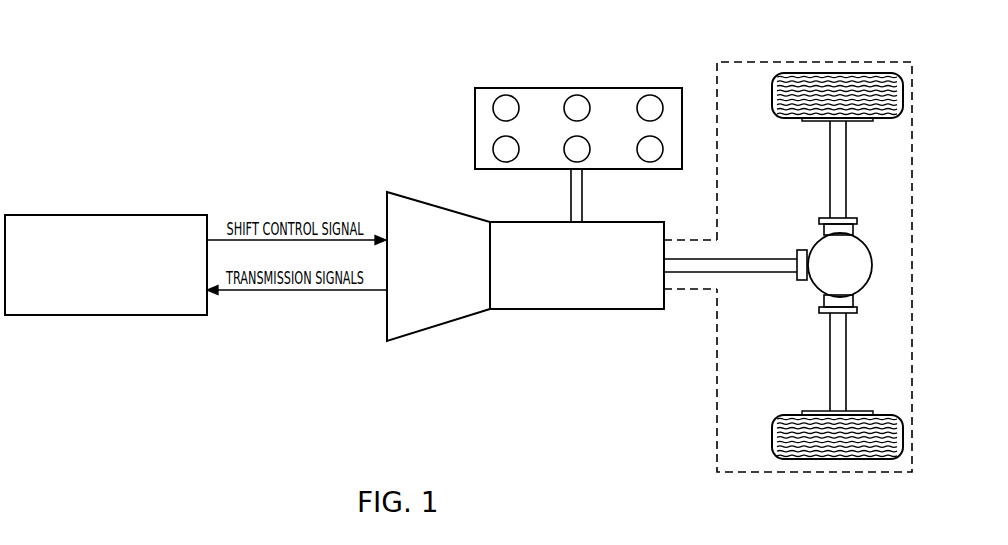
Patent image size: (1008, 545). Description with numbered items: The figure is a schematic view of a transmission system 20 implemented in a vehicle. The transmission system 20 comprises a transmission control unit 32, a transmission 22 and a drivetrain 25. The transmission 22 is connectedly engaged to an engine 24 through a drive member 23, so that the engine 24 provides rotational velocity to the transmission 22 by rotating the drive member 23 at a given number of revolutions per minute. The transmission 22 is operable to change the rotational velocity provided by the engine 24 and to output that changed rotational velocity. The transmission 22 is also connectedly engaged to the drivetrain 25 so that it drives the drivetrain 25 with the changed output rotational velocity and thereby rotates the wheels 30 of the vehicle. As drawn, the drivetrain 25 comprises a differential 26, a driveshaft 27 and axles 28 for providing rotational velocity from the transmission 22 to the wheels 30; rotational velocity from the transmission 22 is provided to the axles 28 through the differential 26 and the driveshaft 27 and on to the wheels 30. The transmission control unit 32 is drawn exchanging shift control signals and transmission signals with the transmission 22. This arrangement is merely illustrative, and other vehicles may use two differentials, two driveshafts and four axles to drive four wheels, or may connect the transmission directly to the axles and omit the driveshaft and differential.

The transmission system 20 is at (108, 66).
The transmission 22 is at (576, 311).
The drive member 23 is at (583, 198).
The engine 24 is at (577, 87).
The drivetrain 25 is at (752, 61).
The differential 26 is at (866, 238).
The driveshaft 27 is at (757, 257).
The axles 28 is at (830, 168).
The wheels 30 is at (772, 95).
The transmission control unit 32 is at (107, 316).